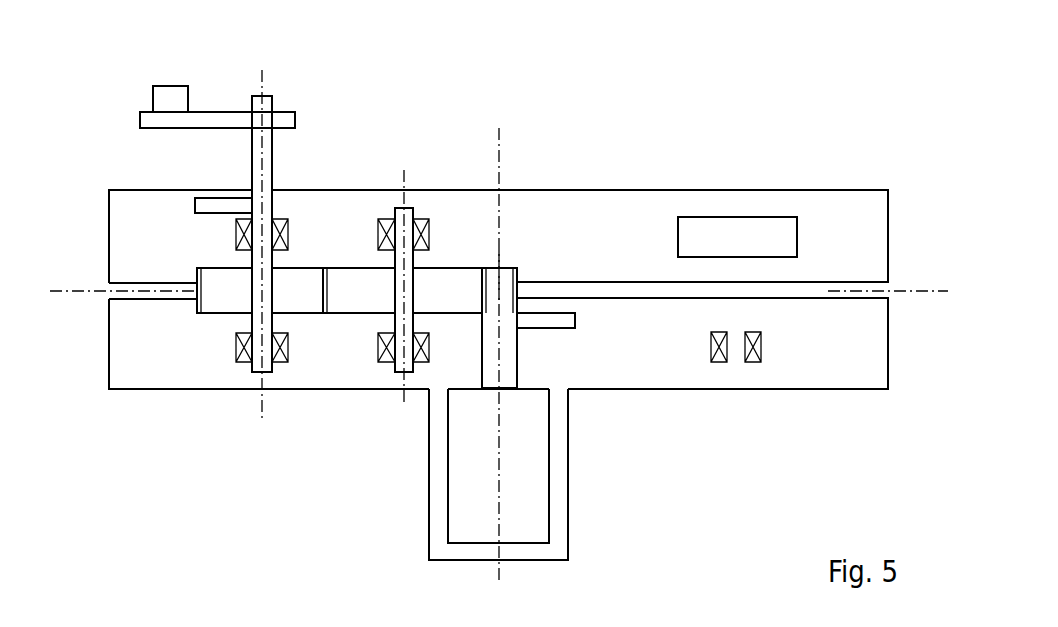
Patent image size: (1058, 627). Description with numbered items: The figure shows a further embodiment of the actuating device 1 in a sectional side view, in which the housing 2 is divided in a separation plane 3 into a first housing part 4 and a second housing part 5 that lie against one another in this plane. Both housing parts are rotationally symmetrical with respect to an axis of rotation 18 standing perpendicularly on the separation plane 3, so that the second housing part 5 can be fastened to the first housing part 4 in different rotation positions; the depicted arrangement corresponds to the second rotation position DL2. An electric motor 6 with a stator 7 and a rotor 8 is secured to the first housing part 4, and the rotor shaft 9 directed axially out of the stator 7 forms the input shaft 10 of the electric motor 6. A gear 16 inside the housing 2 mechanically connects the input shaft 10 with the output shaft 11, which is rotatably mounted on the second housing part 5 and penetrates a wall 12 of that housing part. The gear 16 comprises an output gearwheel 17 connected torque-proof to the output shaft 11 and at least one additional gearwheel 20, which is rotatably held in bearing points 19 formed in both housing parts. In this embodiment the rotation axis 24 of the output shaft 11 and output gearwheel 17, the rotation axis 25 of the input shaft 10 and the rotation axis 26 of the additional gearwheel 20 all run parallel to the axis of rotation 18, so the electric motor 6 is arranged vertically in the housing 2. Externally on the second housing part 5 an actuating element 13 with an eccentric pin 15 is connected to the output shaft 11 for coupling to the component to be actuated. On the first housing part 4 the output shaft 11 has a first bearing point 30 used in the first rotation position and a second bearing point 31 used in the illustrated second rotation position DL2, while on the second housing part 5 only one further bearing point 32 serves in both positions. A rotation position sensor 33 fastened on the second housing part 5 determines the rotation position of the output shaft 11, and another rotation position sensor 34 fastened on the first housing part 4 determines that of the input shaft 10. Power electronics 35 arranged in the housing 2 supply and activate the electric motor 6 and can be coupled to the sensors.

The actuating device 1 is at (895, 146).
The housing 2 is at (785, 186).
The separation plane 3 is at (900, 290).
The first housing part 4 is at (888, 340).
The second housing part 5 is at (888, 212).
The electric motor 6 is at (552, 462).
The stator 7 is at (549, 508).
The rotor 8 is at (468, 475).
The rotor shaft 9 is at (517, 350).
The input shaft 10 is at (499, 328).
The output shaft 11 is at (272, 105).
The wall 12 is at (585, 190).
The actuating element 13 is at (138, 117).
The pin 15 is at (170, 93).
The gear 16 is at (331, 338).
The output gearwheel 17 is at (298, 278).
The axis of rotation 18 is at (499, 135).
The bearing point 19 is at (378, 235).
The additional gearwheel 20 is at (453, 268).
The rotation axis 24 is at (262, 78).
The rotation axis 25 is at (500, 255).
The rotation axis 26 is at (404, 177).
The first bearing point 30 is at (761, 345).
The second bearing point 31 is at (238, 345).
The further bearing point 32 is at (288, 235).
The rotation position sensor 33 is at (218, 205).
The rotation position sensor 34 is at (570, 321).
The power electronics 35 is at (737, 237).
The second rotation position DL2 is at (658, 134).